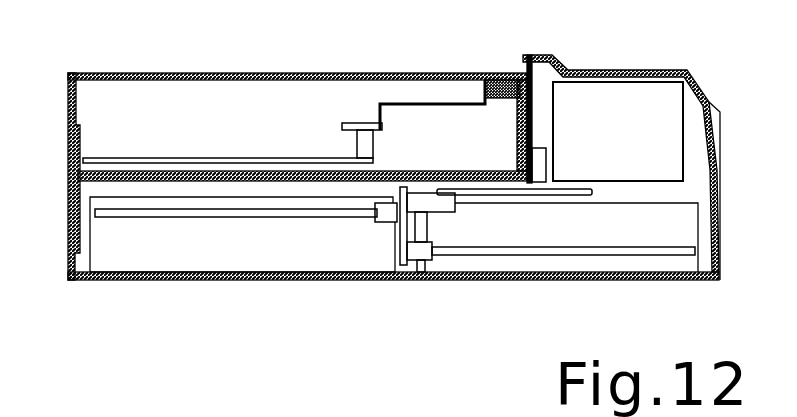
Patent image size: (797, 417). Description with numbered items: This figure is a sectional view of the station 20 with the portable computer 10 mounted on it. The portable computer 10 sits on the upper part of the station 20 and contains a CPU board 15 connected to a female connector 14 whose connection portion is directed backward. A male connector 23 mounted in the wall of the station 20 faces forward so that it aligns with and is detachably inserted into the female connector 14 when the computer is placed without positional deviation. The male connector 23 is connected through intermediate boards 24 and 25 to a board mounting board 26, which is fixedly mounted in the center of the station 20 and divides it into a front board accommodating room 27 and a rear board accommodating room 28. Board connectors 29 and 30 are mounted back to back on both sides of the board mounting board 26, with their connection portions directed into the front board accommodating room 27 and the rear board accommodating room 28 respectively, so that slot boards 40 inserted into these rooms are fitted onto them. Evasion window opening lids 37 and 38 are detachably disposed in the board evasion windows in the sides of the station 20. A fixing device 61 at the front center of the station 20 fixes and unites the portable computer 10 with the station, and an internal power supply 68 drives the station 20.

The portable computer 10 is at (370, 72).
The female connector 14 is at (491, 78).
The CPU board 15 is at (168, 158).
The station 20 is at (667, 278).
The male connector 23 is at (511, 72).
The intermediate board 24 is at (533, 97).
The intermediate board 25 is at (563, 233).
The board mounting board 26 is at (398, 253).
The front board accommodating room 27 is at (245, 253).
The rear board accommodating room 28 is at (478, 262).
The board connector 29 is at (385, 220).
The board connector 30 is at (422, 260).
The evasion window opening lid 37 is at (148, 262).
The evasion window opening lid 38 is at (693, 223).
The slot board 40 is at (190, 217).
The fixing device 61 is at (60, 200).
The internal power supply 68 is at (660, 93).